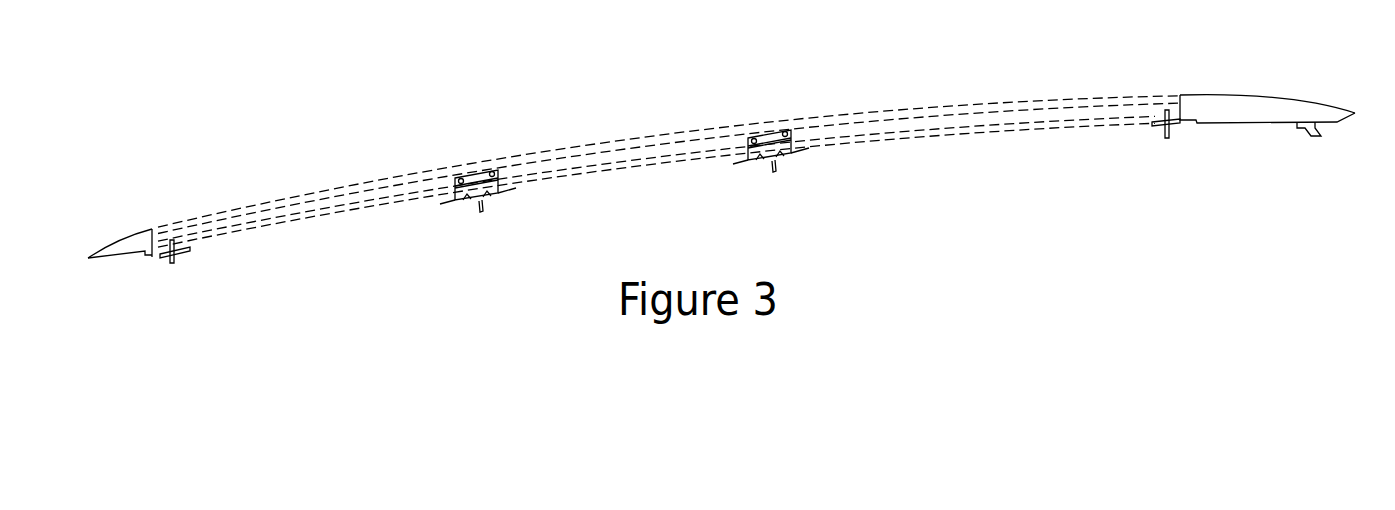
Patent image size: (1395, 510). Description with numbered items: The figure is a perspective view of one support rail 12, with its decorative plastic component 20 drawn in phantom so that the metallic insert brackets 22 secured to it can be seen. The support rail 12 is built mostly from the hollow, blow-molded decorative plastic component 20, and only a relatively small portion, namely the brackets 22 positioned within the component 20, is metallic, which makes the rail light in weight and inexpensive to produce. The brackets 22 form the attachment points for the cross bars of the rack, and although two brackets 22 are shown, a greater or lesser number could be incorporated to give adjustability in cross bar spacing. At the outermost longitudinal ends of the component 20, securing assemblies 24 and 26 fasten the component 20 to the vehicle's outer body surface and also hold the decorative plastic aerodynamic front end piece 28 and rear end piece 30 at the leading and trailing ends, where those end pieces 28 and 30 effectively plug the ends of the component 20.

The support rail 12 is at (607, 115).
The decorative plastic component 20 is at (380, 178).
The metallic insert bracket 22 is at (487, 196).
The securing assembly 24 is at (185, 263).
The securing assembly 26 is at (1160, 134).
The front end piece 28 is at (113, 252).
The rear end piece 30 is at (1238, 113).